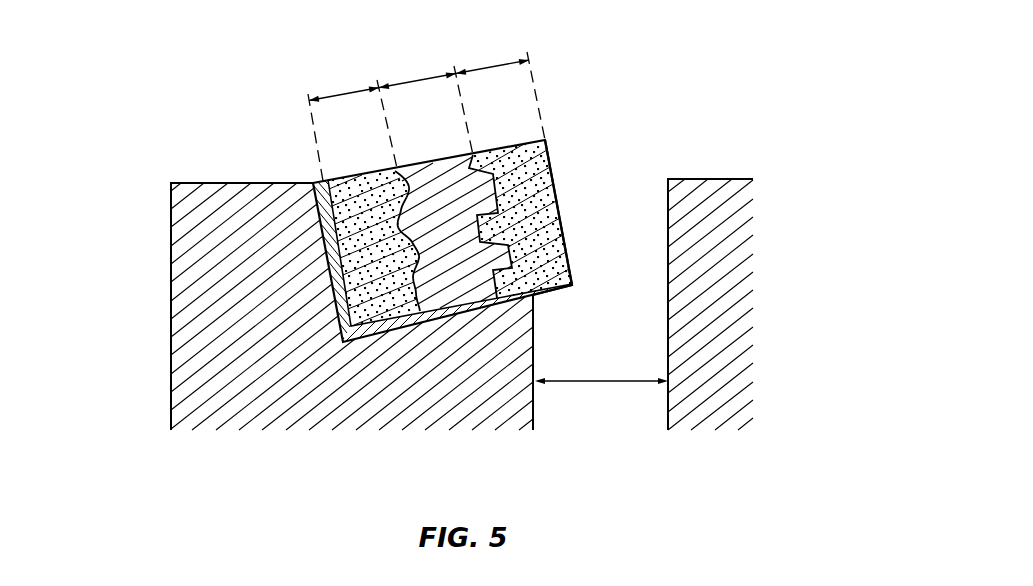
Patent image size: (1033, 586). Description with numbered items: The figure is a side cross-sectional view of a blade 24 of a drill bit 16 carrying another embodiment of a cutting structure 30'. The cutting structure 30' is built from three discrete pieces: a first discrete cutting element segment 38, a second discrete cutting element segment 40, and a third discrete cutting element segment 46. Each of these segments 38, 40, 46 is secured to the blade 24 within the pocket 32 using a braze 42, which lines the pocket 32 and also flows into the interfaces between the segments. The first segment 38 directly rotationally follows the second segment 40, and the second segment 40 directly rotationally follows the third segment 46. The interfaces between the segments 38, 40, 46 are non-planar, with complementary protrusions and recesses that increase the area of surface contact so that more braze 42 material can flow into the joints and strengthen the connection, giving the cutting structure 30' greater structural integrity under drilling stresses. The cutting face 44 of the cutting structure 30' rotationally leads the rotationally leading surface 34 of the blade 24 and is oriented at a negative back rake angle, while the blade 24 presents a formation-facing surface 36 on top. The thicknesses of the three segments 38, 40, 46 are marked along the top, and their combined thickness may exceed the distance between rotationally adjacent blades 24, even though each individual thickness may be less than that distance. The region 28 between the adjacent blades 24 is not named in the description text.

The drill bit 16 is at (134, 121).
The blade 24 is at (191, 276).
The gap / chip space 28 is at (613, 233).
The cutting structure 30' is at (442, 322).
The pocket 32 is at (323, 232).
The rotationally leading surface 34 is at (535, 415).
The formation-facing surface 36 is at (217, 183).
The first discrete cutting element segment 38 is at (383, 303).
The second discrete cutting element segment 40 is at (462, 288).
The braze 42 is at (534, 297).
The cutting face 44 is at (555, 192).
The third discrete cutting element segment 46 is at (517, 296).